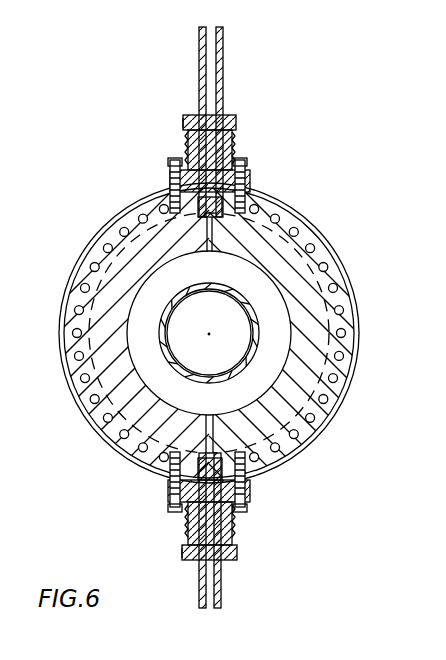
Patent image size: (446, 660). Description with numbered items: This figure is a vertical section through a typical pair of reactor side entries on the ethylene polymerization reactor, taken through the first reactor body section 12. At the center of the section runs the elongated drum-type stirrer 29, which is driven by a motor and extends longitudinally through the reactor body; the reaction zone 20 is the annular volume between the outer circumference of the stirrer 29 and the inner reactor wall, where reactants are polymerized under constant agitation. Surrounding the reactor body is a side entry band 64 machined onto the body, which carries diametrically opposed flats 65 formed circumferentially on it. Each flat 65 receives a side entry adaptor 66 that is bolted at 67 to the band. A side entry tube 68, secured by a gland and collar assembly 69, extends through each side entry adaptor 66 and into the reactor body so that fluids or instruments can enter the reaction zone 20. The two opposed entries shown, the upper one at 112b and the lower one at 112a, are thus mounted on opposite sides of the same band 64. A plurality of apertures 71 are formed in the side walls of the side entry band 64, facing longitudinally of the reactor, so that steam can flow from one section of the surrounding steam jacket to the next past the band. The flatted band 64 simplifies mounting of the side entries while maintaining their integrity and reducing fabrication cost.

The first reactor body section 12 is at (279, 254).
The reaction zone 20 is at (210, 274).
The stirrer 29 is at (242, 303).
The side entry band 64 is at (72, 278).
The flats 65 is at (170, 160).
The side entry adaptor 66 is at (233, 152).
The bolts 67 is at (250, 180).
The side entry tube 68 is at (223, 72).
The gland and collar assembly 69 is at (235, 118).
The apertures 71 is at (158, 210).
The lower connection 112a is at (182, 552).
The upper connection 112b is at (186, 118).